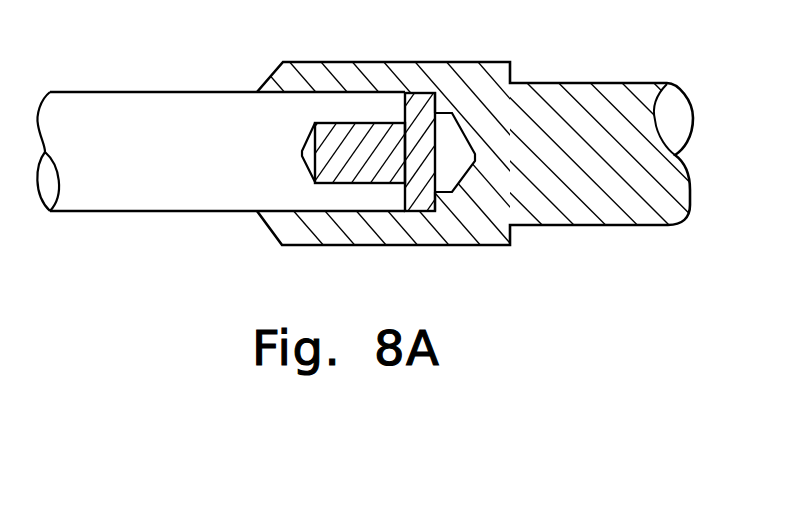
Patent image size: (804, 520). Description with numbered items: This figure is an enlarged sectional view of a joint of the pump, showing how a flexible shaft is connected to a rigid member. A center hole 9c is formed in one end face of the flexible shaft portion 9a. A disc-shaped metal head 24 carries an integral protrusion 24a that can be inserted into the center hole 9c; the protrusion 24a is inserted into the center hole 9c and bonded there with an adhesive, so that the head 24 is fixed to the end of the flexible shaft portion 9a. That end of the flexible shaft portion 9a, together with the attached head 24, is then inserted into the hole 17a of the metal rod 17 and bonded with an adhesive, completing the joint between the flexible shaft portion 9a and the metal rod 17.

The flexible shaft portion 9a is at (147, 91).
The center hole 9c is at (304, 148).
The metal rod 17 is at (584, 226).
The hole 17a is at (461, 161).
The disc-shaped metal head 24 is at (418, 125).
The protrusion 24a is at (360, 150).